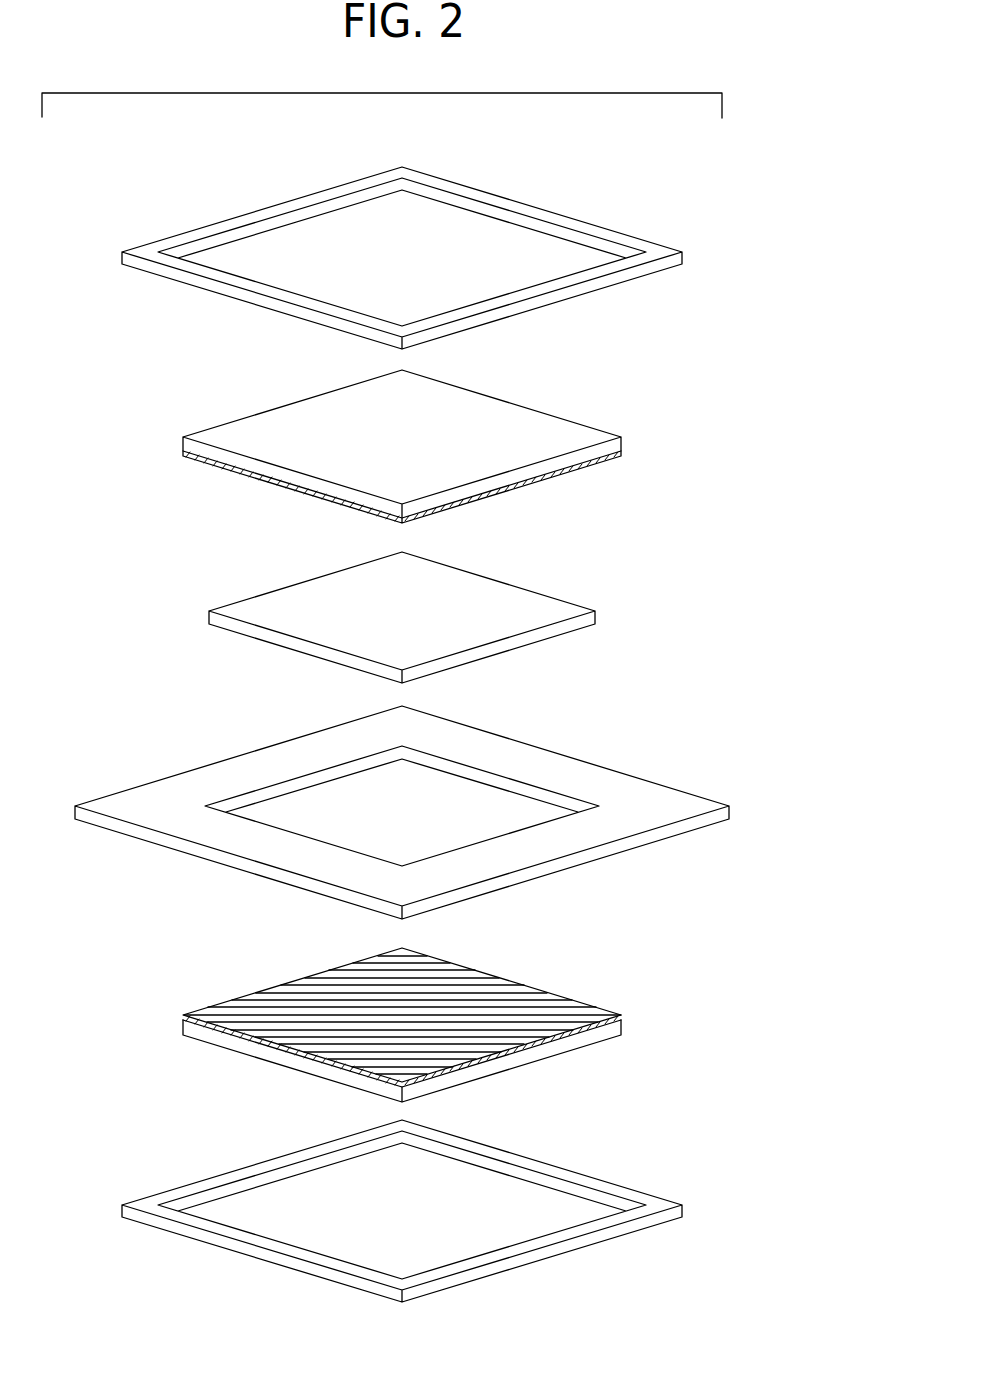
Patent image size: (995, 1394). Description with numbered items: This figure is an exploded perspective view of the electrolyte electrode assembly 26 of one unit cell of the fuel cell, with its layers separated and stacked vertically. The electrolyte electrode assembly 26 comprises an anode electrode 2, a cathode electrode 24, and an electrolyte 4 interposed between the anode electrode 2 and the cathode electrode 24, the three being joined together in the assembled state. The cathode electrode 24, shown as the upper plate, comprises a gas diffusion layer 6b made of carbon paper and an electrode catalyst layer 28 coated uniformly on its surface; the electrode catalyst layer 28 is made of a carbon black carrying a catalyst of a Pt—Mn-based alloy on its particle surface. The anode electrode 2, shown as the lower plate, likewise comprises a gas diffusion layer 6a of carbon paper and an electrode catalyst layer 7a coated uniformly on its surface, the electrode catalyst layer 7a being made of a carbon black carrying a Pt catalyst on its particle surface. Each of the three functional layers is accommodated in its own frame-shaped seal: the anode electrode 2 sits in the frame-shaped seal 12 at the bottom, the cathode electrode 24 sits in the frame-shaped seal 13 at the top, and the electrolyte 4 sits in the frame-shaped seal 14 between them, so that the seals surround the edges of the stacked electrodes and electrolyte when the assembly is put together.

The electrolyte electrode assembly 26 is at (565, 139).
The frame-shaped seal 13 is at (230, 207).
The cathode electrode 24 is at (411, 439).
The gas diffusion layer 6b is at (572, 430).
The electrode catalyst layer 28 is at (572, 470).
The electrolyte 4 is at (236, 610).
The frame-shaped seal 14 is at (163, 791).
The anode electrode 2 is at (427, 1016).
The electrode catalyst layer 7a is at (587, 1002).
The gas diffusion layer 6a is at (585, 1052).
The frame-shaped seal 12 is at (228, 1162).